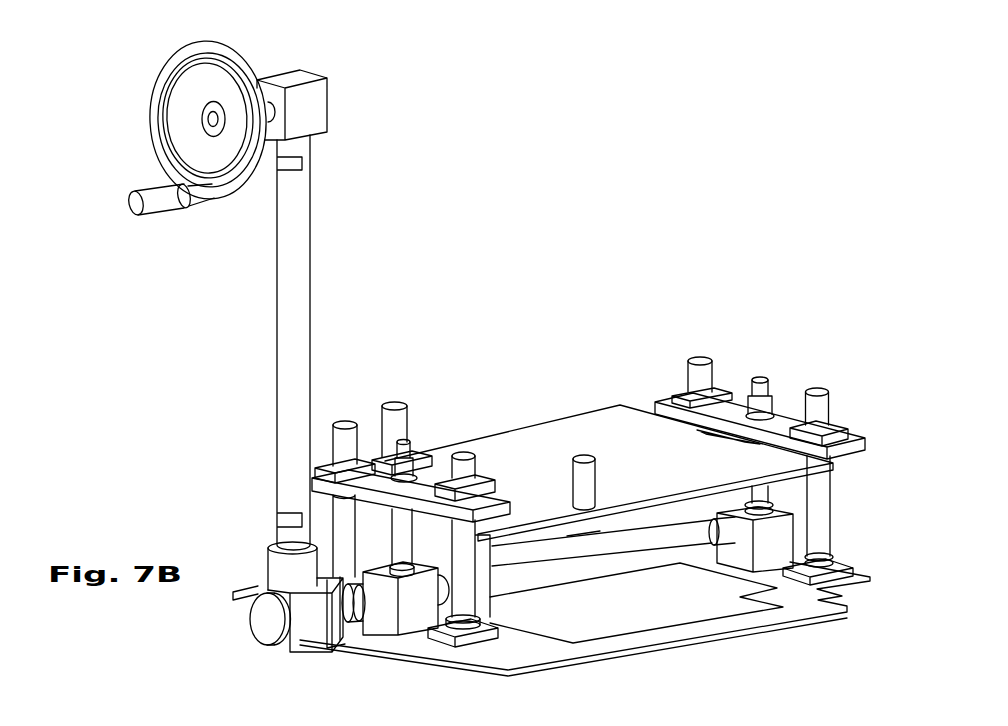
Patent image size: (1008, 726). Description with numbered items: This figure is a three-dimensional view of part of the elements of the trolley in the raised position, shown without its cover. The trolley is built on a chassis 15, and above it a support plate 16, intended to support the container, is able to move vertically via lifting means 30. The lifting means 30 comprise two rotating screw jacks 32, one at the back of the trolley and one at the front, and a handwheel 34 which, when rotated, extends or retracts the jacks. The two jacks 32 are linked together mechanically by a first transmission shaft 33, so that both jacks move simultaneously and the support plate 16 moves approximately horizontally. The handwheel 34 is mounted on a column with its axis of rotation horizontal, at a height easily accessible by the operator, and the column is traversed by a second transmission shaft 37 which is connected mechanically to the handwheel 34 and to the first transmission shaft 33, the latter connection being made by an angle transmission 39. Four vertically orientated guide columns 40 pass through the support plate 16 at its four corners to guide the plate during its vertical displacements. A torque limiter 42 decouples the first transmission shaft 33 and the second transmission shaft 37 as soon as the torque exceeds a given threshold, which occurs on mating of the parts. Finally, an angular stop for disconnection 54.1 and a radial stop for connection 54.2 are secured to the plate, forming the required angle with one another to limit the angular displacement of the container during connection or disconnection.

The chassis 15 is at (742, 624).
The support plate 16 is at (613, 435).
The lifting means 30 is at (218, 314).
The rotating screw jack 32 is at (407, 463).
The first transmission shaft 33 is at (557, 572).
The handwheel 34 is at (152, 74).
The second transmission shaft 37 is at (293, 278).
The angle transmission 39 is at (267, 615).
The guide column 40 is at (343, 422).
The torque limiter 42 is at (372, 604).
The angular stop for disconnection 54.1 is at (585, 467).
The radial stop for connection 54.2 is at (393, 418).